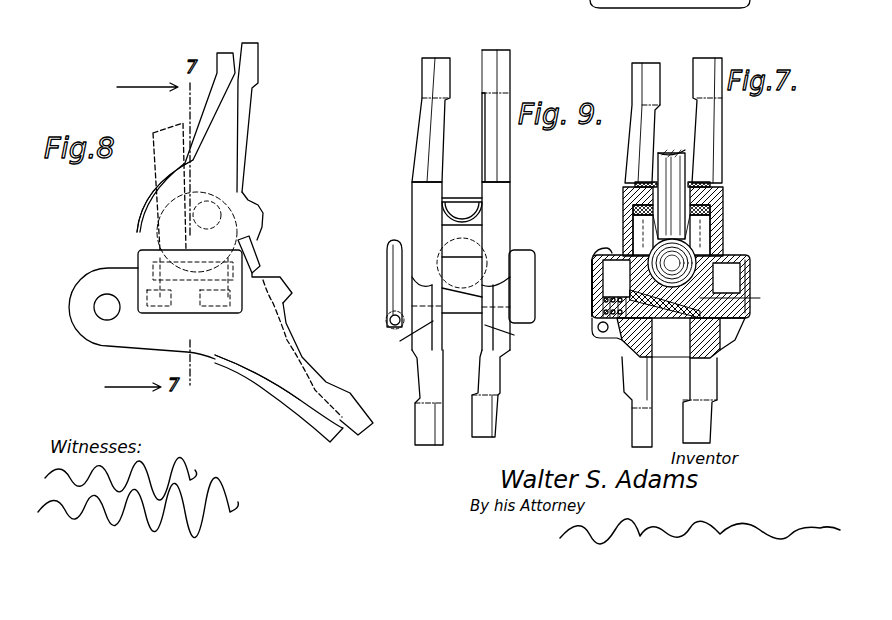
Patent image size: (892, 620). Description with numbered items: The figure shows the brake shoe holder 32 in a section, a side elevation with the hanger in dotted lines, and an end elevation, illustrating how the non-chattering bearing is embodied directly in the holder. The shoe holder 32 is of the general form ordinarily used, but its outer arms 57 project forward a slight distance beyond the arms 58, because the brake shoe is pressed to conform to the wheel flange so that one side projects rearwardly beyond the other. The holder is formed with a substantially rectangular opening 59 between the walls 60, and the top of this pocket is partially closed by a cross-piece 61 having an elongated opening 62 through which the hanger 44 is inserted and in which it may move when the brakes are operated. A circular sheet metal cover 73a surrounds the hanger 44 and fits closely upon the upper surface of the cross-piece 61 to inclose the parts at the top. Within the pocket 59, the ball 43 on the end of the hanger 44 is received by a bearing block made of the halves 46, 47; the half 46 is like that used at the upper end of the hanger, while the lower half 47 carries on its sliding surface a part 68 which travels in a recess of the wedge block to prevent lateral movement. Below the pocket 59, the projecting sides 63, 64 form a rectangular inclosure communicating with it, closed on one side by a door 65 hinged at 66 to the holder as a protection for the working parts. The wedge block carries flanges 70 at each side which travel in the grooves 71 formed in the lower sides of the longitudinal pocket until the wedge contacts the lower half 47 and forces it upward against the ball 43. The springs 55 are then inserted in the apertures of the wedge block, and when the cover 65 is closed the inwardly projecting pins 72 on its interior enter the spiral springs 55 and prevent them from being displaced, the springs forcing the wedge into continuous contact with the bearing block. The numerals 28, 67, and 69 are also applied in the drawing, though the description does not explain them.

In FIG. 8, the operating arm 28 is at (87, 279).
In FIG. 9, the operating arm 28 is at (459, 344).
In FIG. 8, the shoe holder 32 is at (257, 366).
In FIG. 8, the ball 43 is at (262, 246).
In FIG. 7, the ball 43 is at (672, 263).
In FIG. 8, the hanger 44 is at (178, 126).
In FIG. 7, the hanger 44 is at (680, 152).
In FIG. 8, the lower half block 46 is at (260, 203).
In FIG. 7, the lower half block 46 is at (637, 226).
In FIG. 7, the lower half of bearing block 47 is at (743, 311).
In FIG. 7, the springs 55 is at (616, 278).
In FIG. 8, the outer arms 57 is at (352, 390).
In FIG. 9, the outer arms 57 is at (495, 60).
In FIG. 7, the outer arms 57 is at (707, 58).
In FIG. 8, the arms 58 is at (227, 52).
In FIG. 9, the arms 58 is at (396, 448).
In FIG. 7, the arms 58 is at (652, 63).
In FIG. 7, the rectangular opening 59 is at (723, 226).
In FIG. 9, the walls 60 is at (512, 232).
In FIG. 7, the walls 60 is at (622, 233).
In FIG. 7, the cross-piece 61 is at (717, 181).
In FIG. 7, the opening 62 is at (700, 168).
In FIG. 9, the projecting side 63 is at (522, 286).
In FIG. 7, the projecting side 63 is at (755, 258).
In FIG. 7, the projecting side 64 is at (592, 256).
In FIG. 9, the door 65 is at (387, 290).
In FIG. 7, the door 65 is at (596, 282).
In FIG. 9, the hinge 66 is at (386, 323).
In FIG. 7, the hinge 66 is at (603, 333).
In FIG. 7, the insulating block 67 is at (726, 278).
In FIG. 8, the part 68 is at (196, 279).
In FIG. 7, the web 69 is at (662, 318).
In FIG. 8, the flanges 70 is at (240, 296).
In FIG. 8, the grooves 71 is at (262, 268).
In FIG. 7, the grooves 71 is at (737, 326).
In FIG. 7, the pins 72 is at (602, 305).
In FIG. 8, the sheet metal cover 73a is at (133, 220).
In FIG. 7, the sheet metal cover 73a is at (643, 180).